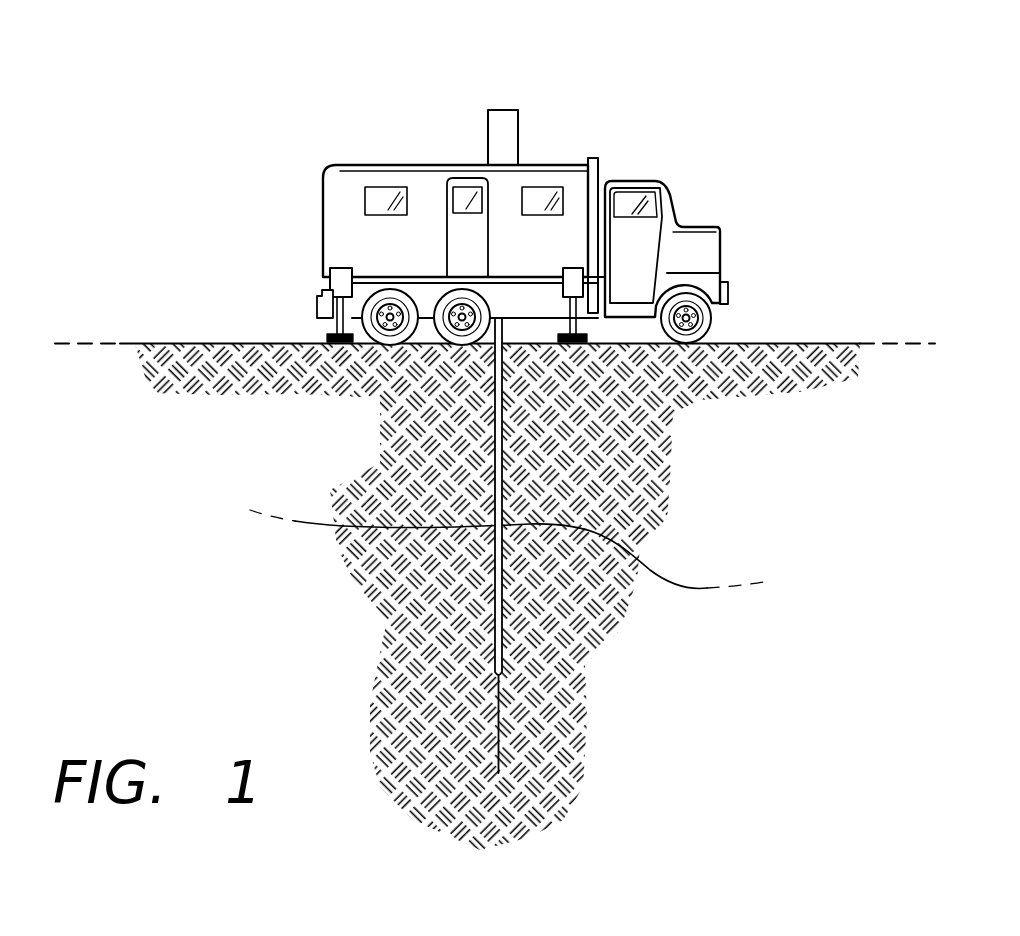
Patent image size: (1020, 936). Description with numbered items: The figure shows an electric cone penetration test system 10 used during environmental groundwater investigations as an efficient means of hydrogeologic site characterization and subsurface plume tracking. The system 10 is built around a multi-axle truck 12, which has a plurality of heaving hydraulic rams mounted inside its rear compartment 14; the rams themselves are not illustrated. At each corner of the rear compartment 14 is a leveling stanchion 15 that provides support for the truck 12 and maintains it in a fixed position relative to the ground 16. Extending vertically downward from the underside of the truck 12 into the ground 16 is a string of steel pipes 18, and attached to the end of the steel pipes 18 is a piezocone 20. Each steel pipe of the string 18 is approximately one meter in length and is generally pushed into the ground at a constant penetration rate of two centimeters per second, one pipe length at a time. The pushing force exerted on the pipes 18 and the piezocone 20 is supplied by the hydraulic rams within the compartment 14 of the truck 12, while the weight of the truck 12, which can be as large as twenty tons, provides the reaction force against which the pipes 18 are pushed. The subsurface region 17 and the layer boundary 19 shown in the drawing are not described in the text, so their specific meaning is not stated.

The electric cone penetration test system 10 is at (698, 155).
The multi-axle truck 12 is at (632, 180).
The rear compartment 14 is at (405, 164).
The leveling stanchion 15 is at (333, 310).
The ground 16 is at (208, 343).
The earth formation 17 is at (392, 467).
The string of steel pipes 18 is at (507, 448).
The subsurface layer boundary 19 is at (377, 625).
The piezocone 20 is at (498, 727).